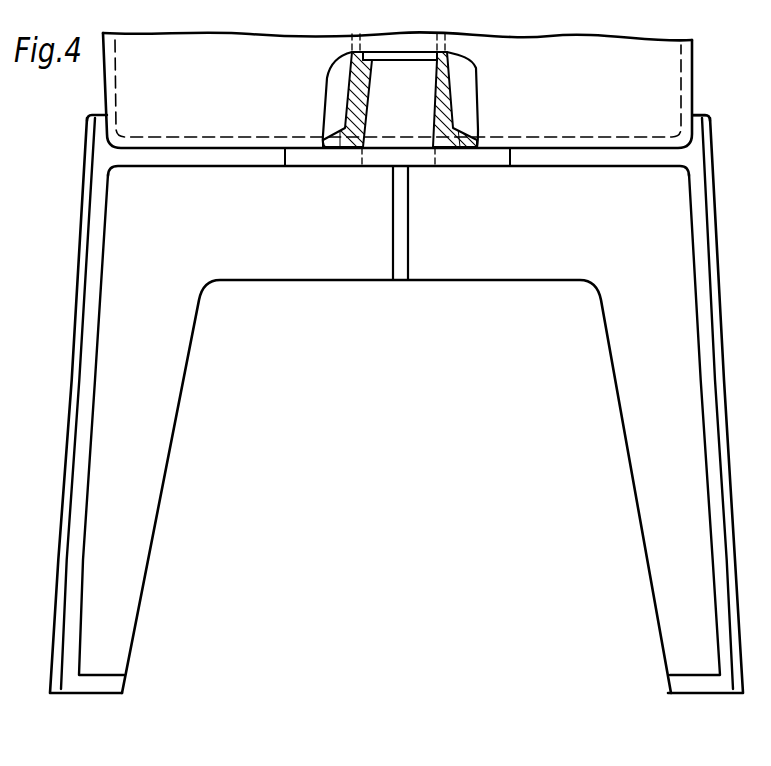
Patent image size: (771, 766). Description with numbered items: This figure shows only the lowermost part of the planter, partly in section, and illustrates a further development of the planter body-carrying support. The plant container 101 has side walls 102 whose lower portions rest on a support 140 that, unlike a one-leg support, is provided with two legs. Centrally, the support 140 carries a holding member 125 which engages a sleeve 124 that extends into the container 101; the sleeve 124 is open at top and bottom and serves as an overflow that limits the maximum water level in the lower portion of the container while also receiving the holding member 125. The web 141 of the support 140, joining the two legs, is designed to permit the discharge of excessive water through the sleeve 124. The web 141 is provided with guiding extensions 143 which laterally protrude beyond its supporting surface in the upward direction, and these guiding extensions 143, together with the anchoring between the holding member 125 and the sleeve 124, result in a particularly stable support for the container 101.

The plant container 101 is at (657, 34).
The side walls 102 is at (689, 69).
The sleeve-shaped support 124 is at (424, 38).
The holding member 125 is at (438, 107).
The support 140 is at (72, 203).
The web 141 is at (310, 268).
The guiding extensions 143 is at (693, 114).